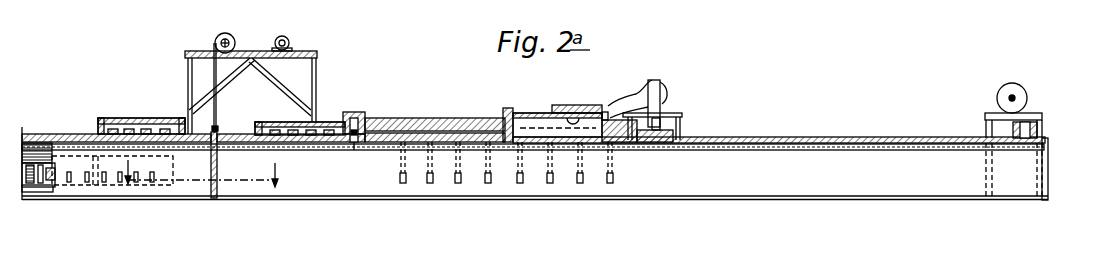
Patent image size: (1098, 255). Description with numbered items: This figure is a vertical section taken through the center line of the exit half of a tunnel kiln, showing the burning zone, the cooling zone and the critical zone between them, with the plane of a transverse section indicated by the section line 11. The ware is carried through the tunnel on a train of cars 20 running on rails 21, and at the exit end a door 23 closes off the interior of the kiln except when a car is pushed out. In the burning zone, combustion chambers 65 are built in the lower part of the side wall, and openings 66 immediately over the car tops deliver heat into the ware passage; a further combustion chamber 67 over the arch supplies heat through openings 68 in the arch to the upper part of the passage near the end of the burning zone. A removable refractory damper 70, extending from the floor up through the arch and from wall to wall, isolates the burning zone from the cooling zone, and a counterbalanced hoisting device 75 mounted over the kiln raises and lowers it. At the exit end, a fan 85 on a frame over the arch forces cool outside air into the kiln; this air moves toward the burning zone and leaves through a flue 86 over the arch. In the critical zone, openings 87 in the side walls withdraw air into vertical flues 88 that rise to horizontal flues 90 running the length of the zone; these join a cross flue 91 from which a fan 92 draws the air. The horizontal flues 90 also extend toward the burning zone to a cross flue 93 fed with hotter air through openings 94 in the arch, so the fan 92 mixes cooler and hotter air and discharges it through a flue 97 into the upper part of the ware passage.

The section line 11 is at (147, 172).
The cars 20 is at (35, 195).
The rails 21 is at (355, 198).
The doors 23 is at (1048, 172).
The combustion chambers 65 is at (75, 152).
The openings 66 is at (120, 184).
The combustion chamber 67 is at (150, 121).
The openings 68 is at (127, 132).
The removable damper 70 is at (218, 152).
The counterbalanced hoisting device 75 is at (234, 32).
The fan 85 is at (1027, 94).
The flue 86 is at (330, 121).
The openings 87 is at (552, 180).
The vertical flues 88 is at (432, 170).
The horizontal flues 90 is at (428, 121).
The cross flue 91 is at (682, 130).
The fan 92 is at (662, 92).
The cross flue 93 is at (365, 114).
The openings 94 is at (354, 150).
The flue 97 is at (587, 113).